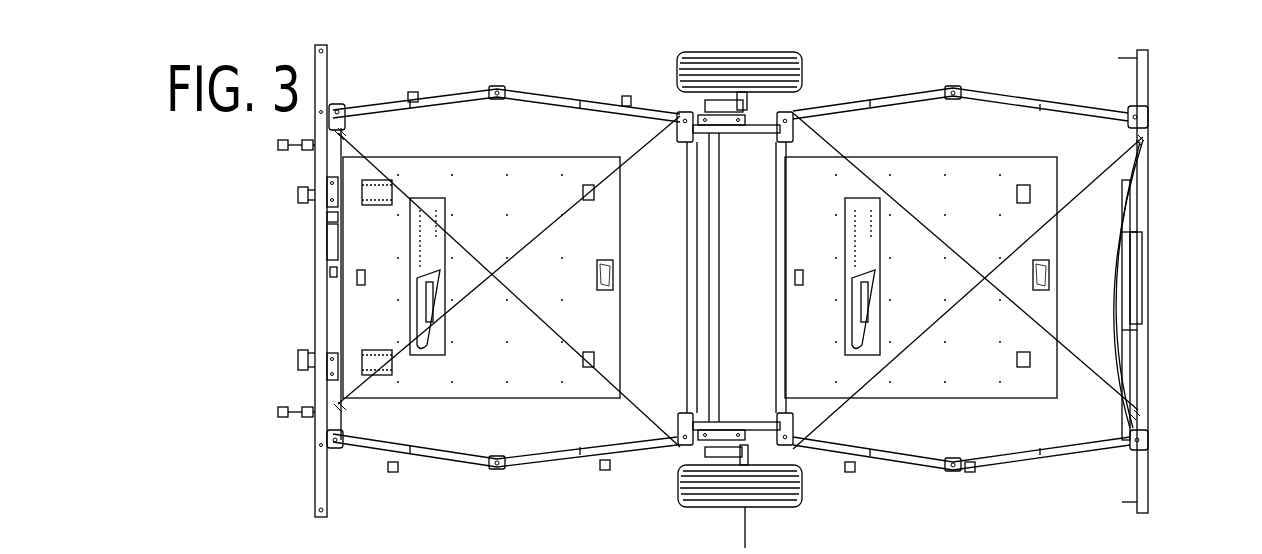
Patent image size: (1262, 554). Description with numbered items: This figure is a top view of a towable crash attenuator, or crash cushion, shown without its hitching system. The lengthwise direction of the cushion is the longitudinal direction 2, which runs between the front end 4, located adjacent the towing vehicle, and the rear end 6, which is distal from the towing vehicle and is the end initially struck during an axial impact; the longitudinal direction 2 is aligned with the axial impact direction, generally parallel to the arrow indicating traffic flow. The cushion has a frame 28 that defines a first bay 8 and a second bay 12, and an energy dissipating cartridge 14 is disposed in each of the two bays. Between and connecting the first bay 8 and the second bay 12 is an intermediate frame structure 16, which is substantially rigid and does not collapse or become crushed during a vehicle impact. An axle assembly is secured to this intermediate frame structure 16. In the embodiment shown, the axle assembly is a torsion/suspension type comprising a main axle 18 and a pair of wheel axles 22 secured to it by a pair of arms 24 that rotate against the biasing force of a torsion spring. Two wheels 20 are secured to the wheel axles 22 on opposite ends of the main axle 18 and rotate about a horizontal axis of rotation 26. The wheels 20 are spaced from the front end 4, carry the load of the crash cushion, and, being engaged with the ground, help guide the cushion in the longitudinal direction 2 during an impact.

The longitudinal direction 2 is at (1172, 275).
The front end 4 is at (315, 458).
The rear end 6 is at (1152, 326).
The first bay 8 is at (876, 426).
The second bay 12 is at (441, 432).
The energy dissipating cartridge 14 is at (469, 202).
The intermediate frame structure 16 is at (752, 128).
The main axle 18 is at (715, 300).
The wheel 20 is at (802, 48).
The wheel axle 22 is at (778, 462).
The arm 24 is at (672, 465).
The horizontal axis of rotation 26 is at (748, 517).
The frame 28 is at (538, 95).